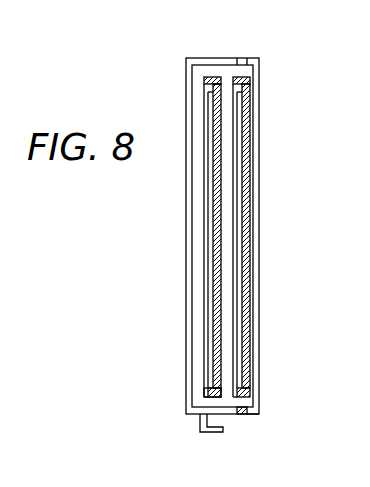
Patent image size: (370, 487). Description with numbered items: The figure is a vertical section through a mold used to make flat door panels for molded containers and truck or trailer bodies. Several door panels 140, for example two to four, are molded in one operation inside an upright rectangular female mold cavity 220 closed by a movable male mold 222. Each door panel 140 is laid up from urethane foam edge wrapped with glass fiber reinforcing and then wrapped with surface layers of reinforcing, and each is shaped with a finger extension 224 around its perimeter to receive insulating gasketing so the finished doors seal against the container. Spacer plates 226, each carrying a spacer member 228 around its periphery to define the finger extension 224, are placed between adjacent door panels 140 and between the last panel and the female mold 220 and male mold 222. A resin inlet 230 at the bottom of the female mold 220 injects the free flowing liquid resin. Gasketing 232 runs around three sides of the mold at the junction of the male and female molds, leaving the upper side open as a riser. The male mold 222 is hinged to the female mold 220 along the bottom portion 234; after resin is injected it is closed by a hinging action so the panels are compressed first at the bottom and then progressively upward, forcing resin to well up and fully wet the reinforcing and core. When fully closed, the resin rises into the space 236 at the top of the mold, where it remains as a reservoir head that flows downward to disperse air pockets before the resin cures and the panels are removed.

The door panel 140 is at (204, 108).
The female mold cavity 220 is at (184, 208).
The male mold 222 is at (260, 178).
The finger extension 224 is at (204, 391).
The spacer plate 226 is at (217, 77).
The spacer member 228 is at (208, 77).
The resin inlet 230 is at (224, 431).
The gasketing 232 is at (242, 411).
The bottom portion 234 is at (255, 416).
The space 236 is at (246, 58).